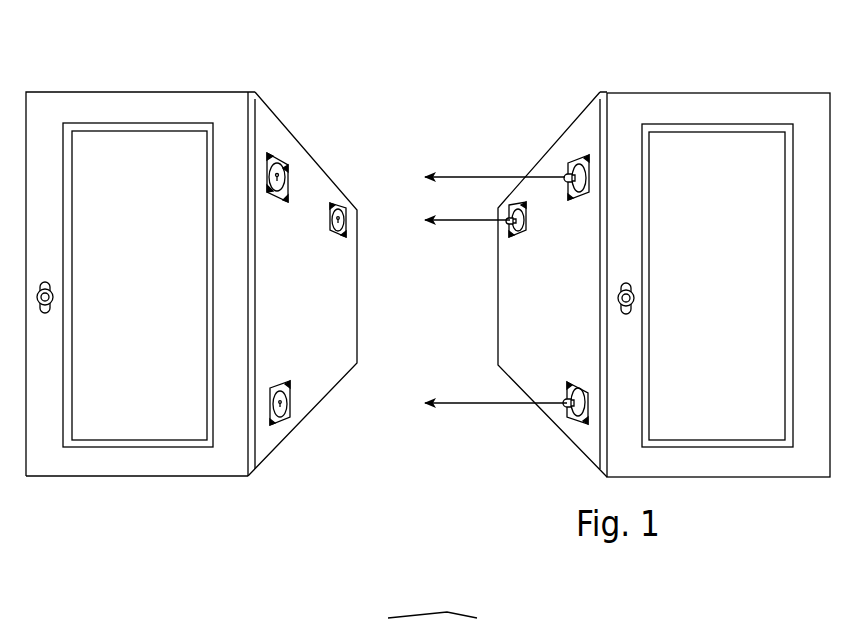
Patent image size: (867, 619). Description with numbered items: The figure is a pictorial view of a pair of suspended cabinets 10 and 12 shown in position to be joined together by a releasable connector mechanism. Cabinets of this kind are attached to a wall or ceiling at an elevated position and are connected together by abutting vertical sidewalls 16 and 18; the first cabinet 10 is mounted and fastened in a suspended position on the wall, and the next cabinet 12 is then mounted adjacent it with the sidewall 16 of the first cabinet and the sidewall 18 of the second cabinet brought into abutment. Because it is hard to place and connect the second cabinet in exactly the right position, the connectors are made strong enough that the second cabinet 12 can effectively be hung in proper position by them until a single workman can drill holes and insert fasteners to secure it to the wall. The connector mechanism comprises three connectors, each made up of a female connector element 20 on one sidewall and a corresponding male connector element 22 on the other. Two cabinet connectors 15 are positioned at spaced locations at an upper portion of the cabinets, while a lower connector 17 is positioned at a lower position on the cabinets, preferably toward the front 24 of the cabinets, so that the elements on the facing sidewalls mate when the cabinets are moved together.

The cabinet 10 is at (282, 98).
The cabinet 12 is at (565, 92).
The cabinet connector 15 is at (338, 203).
The vertical sidewall 16 is at (327, 322).
The lower connector 17 is at (279, 426).
The vertical sidewall 18 is at (538, 265).
The female connector element 20 is at (282, 168).
The male connector element 22 is at (583, 160).
The front 24 is at (165, 503).